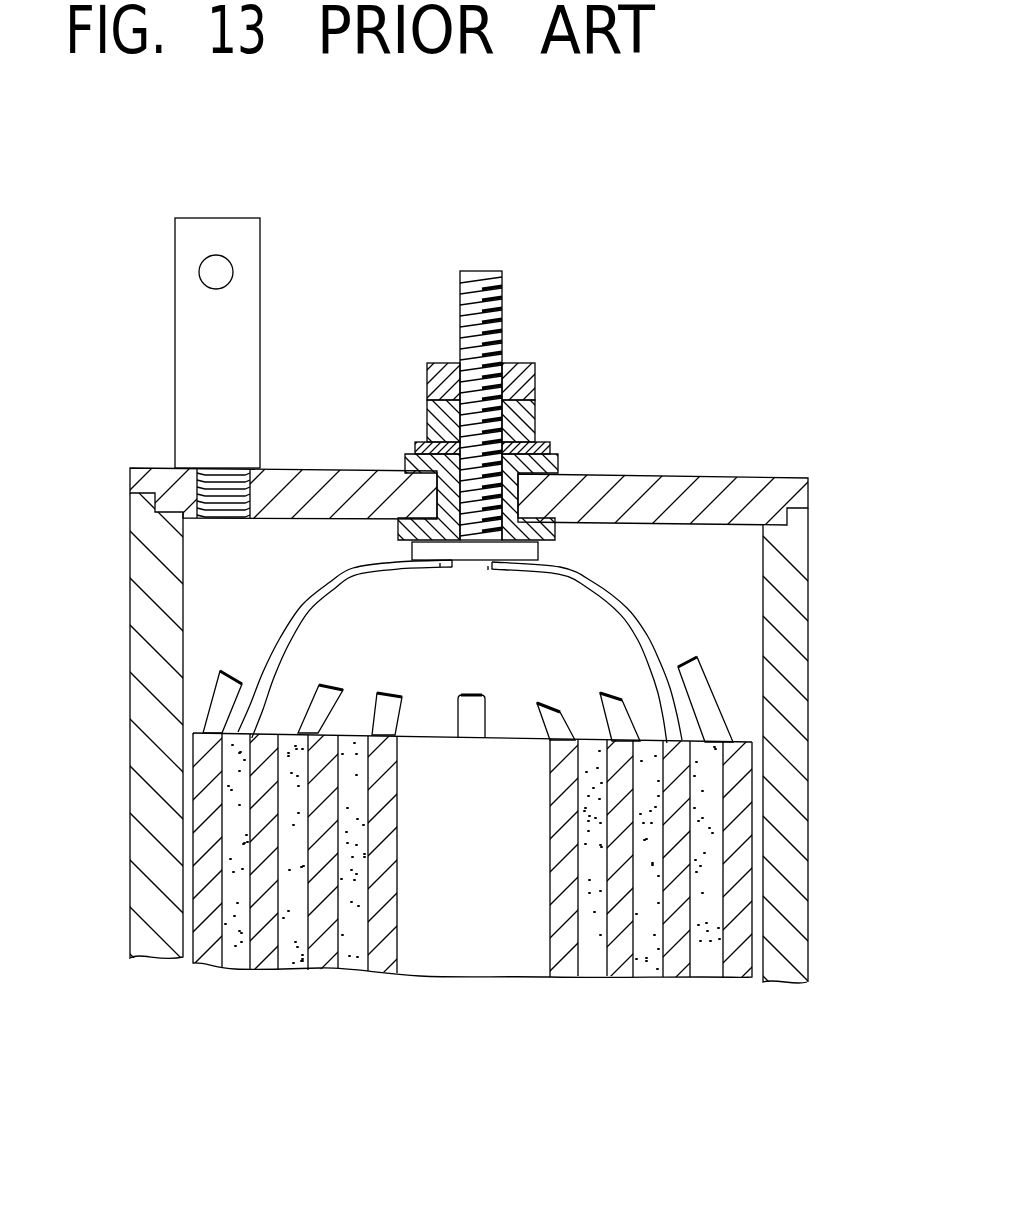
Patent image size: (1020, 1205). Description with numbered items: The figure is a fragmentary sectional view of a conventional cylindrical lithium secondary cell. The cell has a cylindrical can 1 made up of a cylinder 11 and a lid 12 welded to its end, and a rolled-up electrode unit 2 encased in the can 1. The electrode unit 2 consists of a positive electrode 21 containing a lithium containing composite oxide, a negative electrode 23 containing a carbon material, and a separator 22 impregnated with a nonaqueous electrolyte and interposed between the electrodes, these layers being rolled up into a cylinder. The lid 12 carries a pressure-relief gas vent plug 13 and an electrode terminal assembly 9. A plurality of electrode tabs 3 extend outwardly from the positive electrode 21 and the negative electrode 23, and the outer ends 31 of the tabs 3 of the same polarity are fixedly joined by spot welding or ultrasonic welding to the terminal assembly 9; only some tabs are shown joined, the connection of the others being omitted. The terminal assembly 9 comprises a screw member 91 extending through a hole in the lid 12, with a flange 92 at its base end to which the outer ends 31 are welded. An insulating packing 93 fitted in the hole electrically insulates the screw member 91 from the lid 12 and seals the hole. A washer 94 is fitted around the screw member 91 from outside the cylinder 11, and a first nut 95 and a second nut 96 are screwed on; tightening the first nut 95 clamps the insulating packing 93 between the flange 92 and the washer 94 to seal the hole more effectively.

The cylindrical can 1 is at (451, 470).
The rolled-up electrode unit 2 is at (495, 889).
The electrode tabs 3 is at (340, 583).
The electrode terminal assembly 9 is at (586, 224).
The cylinder 11 is at (797, 748).
The lid 12 is at (765, 477).
The pressure-relief gas vent plug 13 is at (182, 378).
The positive electrode 21 is at (207, 948).
The separator 22 is at (650, 963).
The negative electrode 23 is at (265, 952).
The outer ends of the electrode tabs 31 is at (435, 570).
The screw member 91 is at (497, 286).
The flange 92 is at (525, 553).
The insulating packing 93 is at (555, 465).
The washer 94 is at (415, 447).
The first nut 95 is at (437, 410).
The second nut 96 is at (427, 367).